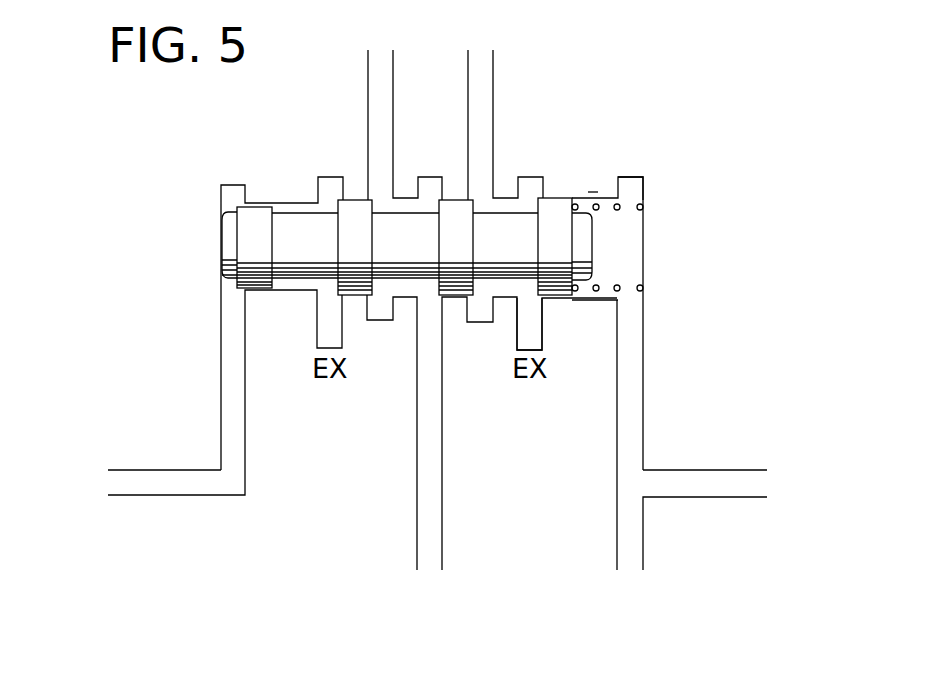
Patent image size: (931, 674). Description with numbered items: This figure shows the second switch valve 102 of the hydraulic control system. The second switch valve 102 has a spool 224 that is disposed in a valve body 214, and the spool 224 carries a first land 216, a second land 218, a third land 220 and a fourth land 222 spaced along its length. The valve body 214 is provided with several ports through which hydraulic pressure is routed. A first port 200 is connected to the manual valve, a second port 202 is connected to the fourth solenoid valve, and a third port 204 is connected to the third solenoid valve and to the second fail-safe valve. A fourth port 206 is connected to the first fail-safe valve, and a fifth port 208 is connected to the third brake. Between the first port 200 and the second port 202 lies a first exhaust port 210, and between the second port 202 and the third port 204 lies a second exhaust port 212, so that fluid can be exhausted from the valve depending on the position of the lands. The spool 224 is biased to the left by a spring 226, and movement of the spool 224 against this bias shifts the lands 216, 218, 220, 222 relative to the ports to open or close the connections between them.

The second switch valve 102 is at (680, 231).
The first port 200 is at (232, 302).
The second port 202 is at (428, 310).
The third port 204 is at (630, 307).
The fourth port 206 is at (377, 183).
The fifth port 208 is at (480, 182).
The first exhaust port 210 is at (332, 306).
The second exhaust port 212 is at (527, 308).
The valve body 214 is at (593, 197).
The first land 216 is at (255, 218).
The second land 218 is at (355, 284).
The third land 220 is at (459, 213).
The fourth land 222 is at (559, 212).
The spool 224 is at (230, 247).
The spring 226 is at (645, 192).